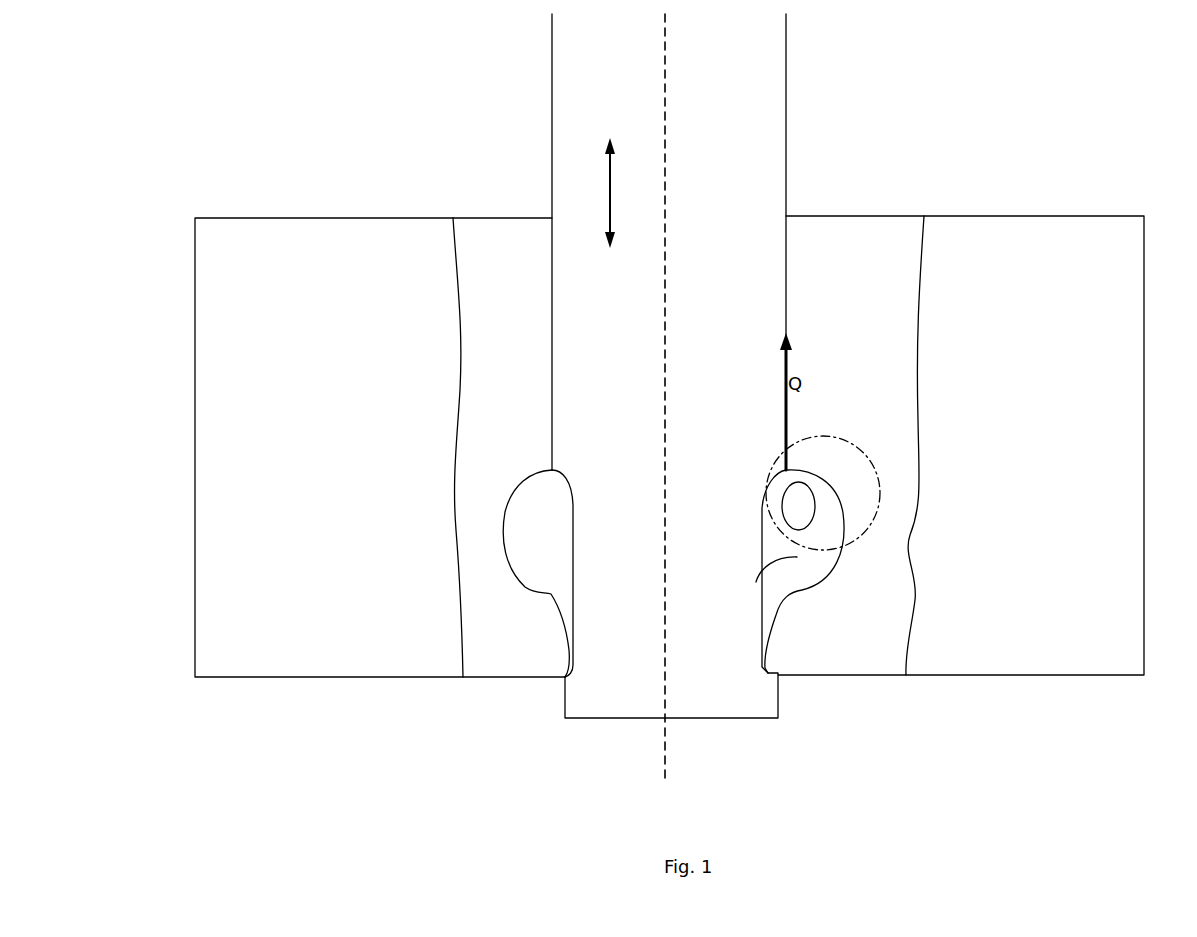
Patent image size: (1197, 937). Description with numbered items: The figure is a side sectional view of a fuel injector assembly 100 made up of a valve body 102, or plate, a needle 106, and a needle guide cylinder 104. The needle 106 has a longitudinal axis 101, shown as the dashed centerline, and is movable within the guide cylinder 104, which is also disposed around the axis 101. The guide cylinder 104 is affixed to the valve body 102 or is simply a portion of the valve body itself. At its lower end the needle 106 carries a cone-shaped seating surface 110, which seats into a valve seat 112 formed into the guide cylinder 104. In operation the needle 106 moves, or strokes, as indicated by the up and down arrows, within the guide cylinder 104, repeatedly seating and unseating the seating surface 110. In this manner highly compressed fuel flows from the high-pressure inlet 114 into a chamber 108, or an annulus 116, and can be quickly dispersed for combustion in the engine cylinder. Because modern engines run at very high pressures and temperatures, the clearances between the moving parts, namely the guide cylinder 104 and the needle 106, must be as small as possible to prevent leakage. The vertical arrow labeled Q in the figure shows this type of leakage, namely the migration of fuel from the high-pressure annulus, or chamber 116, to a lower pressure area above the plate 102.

The fuel injector assembly 100 is at (328, 188).
The longitudinal axis 101 is at (691, 394).
The valve body 102 is at (258, 424).
The needle guide cylinder 104 is at (876, 411).
The needle 106 is at (623, 111).
The chamber 108 is at (853, 575).
The cone-shaped seating surface 110 is at (561, 673).
The valve seat 112 is at (768, 671).
The high-pressure inlet 114 is at (797, 512).
The annulus 116 is at (771, 581).